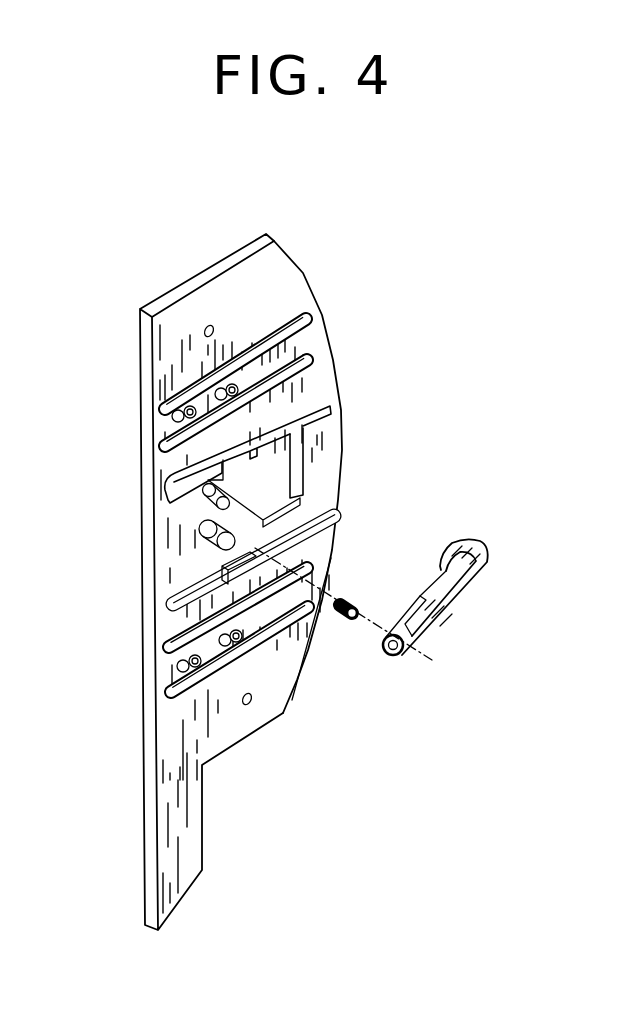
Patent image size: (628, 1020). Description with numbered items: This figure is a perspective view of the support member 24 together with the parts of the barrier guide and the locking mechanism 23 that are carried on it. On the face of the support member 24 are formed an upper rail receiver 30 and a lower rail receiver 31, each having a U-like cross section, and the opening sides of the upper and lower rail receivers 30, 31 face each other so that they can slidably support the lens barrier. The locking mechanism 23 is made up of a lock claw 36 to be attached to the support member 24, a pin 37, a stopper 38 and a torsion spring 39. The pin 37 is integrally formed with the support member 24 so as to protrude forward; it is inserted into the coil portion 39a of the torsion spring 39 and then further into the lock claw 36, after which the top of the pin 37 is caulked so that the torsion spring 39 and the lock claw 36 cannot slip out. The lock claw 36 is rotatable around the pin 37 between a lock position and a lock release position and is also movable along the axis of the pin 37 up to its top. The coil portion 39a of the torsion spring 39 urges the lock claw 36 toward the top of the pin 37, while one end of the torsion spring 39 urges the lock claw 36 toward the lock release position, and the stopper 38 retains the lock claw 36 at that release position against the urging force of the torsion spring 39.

The locking mechanism 23 is at (470, 437).
The support member 24 is at (303, 275).
The upper rail receiver 30 is at (330, 399).
The lower rail receiver 31 is at (330, 518).
The lock claw 36 is at (493, 547).
The pin 37 is at (206, 547).
The stopper 38 is at (203, 505).
The torsion spring 39 is at (367, 632).
The coil portion 39a is at (348, 622).